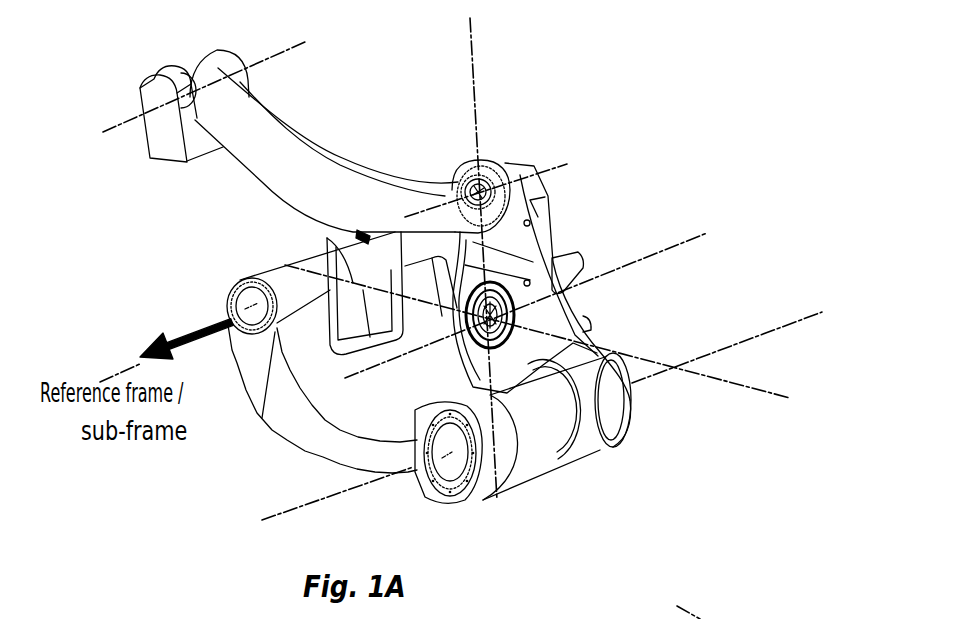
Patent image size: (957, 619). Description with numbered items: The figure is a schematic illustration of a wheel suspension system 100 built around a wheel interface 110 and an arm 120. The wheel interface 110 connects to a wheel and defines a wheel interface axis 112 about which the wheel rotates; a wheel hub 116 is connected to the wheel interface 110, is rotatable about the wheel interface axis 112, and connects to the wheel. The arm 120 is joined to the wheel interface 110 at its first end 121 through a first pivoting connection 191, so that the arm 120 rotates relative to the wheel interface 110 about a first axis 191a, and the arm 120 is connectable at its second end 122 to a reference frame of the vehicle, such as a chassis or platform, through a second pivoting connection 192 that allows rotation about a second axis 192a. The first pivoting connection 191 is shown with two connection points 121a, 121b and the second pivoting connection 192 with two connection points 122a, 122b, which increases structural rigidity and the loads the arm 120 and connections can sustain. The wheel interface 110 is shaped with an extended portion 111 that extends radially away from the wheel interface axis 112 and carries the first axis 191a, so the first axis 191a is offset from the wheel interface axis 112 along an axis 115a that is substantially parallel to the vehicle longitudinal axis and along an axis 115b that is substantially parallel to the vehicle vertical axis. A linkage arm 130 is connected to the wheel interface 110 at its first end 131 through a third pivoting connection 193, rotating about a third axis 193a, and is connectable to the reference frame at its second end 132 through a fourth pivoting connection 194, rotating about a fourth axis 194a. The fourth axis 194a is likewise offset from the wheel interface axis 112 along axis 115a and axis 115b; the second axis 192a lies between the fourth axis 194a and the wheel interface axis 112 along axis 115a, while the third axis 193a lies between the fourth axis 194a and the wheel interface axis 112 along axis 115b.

The wheel suspension system 100 is at (105, 36).
The wheel interface 110 is at (586, 347).
The extended portion 111 is at (634, 399).
The wheel interface axis 112 is at (690, 240).
The axis parallel to vehicle longitudinal axis 115a is at (765, 389).
The axis parallel to vehicle vertical axis 115b is at (476, 124).
The wheel hub 116 is at (558, 285).
The arm 120 is at (315, 440).
The first end of arm 121 is at (418, 483).
The connection point 121a is at (485, 492).
The connection point 121b is at (603, 450).
The second end of arm 122 is at (206, 304).
The connection point 122a is at (278, 276).
The connection point 122b is at (337, 237).
The linkage arm 130 is at (316, 152).
The first end of linkage arm 131 is at (452, 158).
The second end of linkage arm 132 is at (170, 67).
The first pivoting connection 191 is at (533, 452).
The first axis 191a is at (320, 503).
The second pivoting connection 192 is at (348, 260).
The second axis 192a is at (135, 367).
The third pivoting connection 193 is at (477, 187).
The third axis 193a is at (440, 208).
The fourth pivoting connection 194 is at (192, 97).
The fourth axis 194a is at (135, 118).